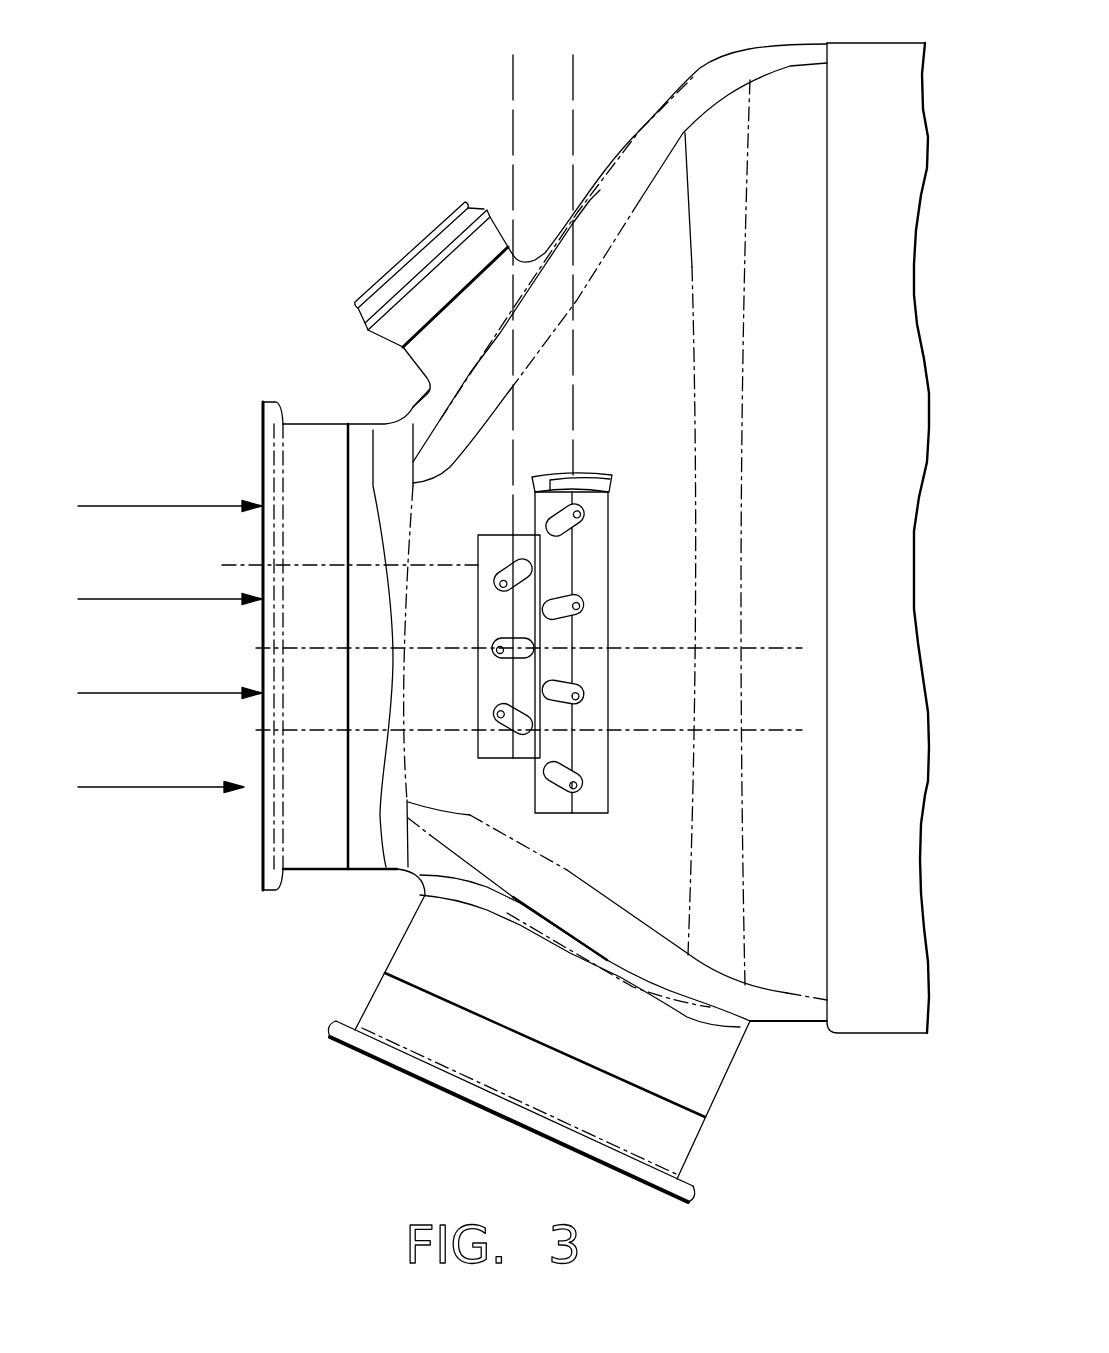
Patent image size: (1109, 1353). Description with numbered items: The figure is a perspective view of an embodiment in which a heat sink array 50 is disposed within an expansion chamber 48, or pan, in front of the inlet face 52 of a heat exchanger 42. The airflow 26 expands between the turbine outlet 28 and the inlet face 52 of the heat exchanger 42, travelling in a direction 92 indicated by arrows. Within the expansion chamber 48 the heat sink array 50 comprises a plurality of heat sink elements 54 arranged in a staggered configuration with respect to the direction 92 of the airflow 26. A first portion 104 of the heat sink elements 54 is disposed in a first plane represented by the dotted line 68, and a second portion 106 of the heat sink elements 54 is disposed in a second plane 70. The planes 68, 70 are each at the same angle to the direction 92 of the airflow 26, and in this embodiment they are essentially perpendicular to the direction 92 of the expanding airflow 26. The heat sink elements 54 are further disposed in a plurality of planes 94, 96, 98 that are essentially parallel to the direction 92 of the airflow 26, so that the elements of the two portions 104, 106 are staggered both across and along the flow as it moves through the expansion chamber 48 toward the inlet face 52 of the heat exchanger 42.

The airflow 26 is at (97, 506).
The turbine outlet 28 is at (264, 662).
The heat exchanger 42 is at (893, 172).
The expansion chamber 48 is at (652, 116).
The heat sink array 50 is at (598, 470).
The inlet face 52 is at (827, 175).
The heat sink elements 54 is at (580, 517).
The first plane 68 is at (513, 113).
The second plane 70 is at (573, 68).
The direction of airflow 92 is at (140, 787).
The plane 94 is at (250, 562).
The plane 96 is at (778, 648).
The plane 98 is at (778, 730).
The first portion of heat sink elements 104 is at (517, 760).
The second portion of heat sink elements 106 is at (610, 585).